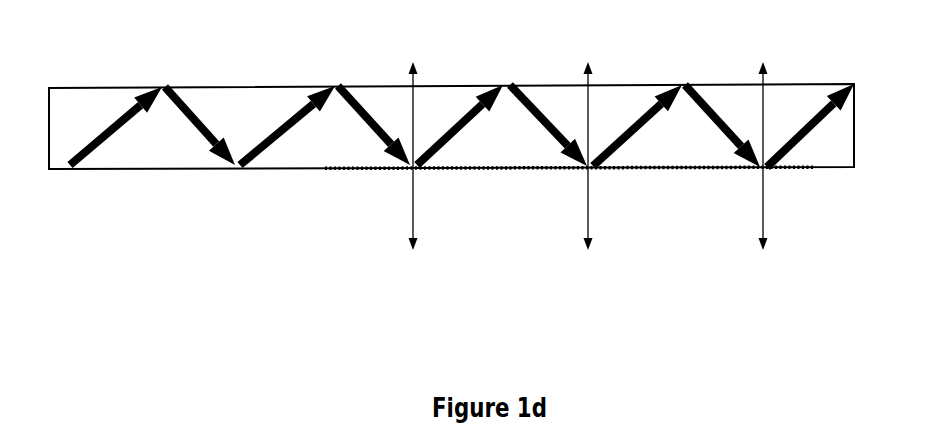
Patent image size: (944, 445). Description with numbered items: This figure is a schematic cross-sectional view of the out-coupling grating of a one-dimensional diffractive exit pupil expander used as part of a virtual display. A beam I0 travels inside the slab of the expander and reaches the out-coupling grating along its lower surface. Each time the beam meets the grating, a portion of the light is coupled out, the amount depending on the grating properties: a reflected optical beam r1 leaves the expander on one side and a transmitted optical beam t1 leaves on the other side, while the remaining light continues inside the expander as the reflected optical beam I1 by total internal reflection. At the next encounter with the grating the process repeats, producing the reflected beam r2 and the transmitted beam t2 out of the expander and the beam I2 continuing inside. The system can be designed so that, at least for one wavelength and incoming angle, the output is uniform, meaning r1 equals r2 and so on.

The incoming optical beam I0 is at (122, 130).
The reflected optical beam inside the EPE I1 is at (455, 137).
The reflected optical beam inside the EPE I2 is at (647, 127).
The reflected optical beam out of the EPE r1 is at (413, 98).
The reflected optical beam out of the EPE r2 is at (589, 98).
The transmitted optical beam out of the EPE t1 is at (415, 231).
The transmitted optical beam out of the EPE t2 is at (595, 231).